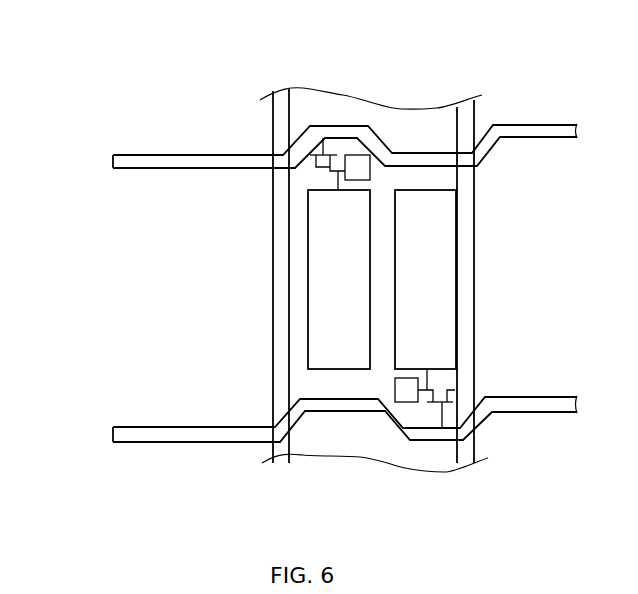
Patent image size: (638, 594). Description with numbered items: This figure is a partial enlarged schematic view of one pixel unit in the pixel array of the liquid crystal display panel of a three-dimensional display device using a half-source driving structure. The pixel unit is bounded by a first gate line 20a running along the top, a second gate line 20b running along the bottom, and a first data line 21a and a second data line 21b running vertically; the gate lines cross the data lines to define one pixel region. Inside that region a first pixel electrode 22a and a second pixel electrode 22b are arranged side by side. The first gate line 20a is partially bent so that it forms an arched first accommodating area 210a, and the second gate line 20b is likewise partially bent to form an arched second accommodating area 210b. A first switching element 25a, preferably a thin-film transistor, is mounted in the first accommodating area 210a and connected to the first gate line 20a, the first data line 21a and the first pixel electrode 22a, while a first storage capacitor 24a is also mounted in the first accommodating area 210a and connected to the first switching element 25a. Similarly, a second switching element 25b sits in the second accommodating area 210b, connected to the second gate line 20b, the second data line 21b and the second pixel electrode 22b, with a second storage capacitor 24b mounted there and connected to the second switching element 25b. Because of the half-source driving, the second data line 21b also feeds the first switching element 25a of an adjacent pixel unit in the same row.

The first gate line 20a is at (112, 160).
The second gate line 20b is at (113, 432).
The first accommodating area 210a is at (343, 150).
The second accommodating area 210b is at (388, 408).
The first data line 21a is at (276, 283).
The second data line 21b is at (465, 218).
The first pixel electrode 22a is at (312, 348).
The second pixel electrode 22b is at (452, 298).
The first storage capacitor 24a is at (338, 172).
The second storage capacitor 24b is at (413, 403).
The first switching element 25a is at (326, 159).
The second switching element 25b is at (444, 391).